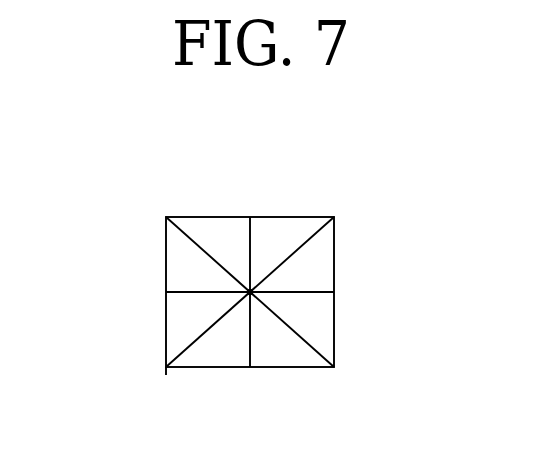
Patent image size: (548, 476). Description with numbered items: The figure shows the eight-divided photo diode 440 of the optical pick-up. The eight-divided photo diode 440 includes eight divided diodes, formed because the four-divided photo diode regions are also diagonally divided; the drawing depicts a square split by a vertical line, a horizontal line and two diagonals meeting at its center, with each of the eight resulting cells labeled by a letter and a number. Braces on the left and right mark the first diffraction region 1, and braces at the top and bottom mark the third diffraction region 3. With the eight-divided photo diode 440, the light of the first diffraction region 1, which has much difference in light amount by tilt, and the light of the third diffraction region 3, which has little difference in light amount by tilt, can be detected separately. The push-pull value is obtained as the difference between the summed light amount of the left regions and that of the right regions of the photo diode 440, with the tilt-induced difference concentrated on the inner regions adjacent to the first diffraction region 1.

The 8-divided photo diode 440 is at (166, 216).
The third diffraction region 3 is at (170, 212).
The first diffraction region 1 is at (165, 215).